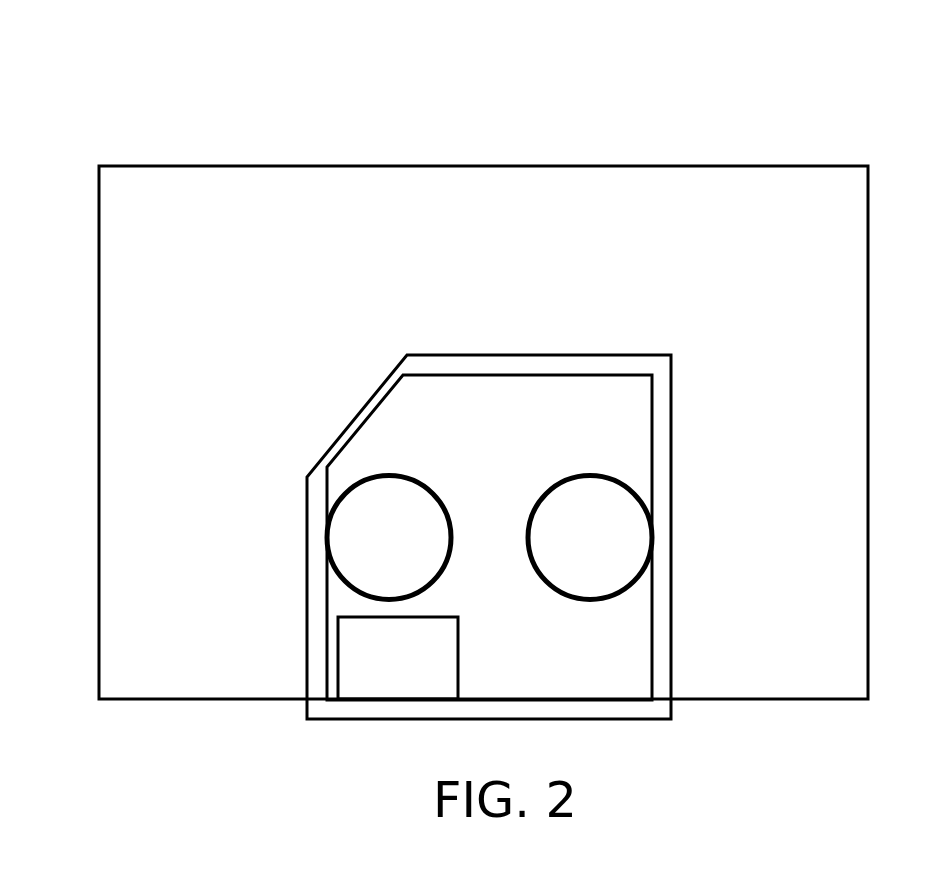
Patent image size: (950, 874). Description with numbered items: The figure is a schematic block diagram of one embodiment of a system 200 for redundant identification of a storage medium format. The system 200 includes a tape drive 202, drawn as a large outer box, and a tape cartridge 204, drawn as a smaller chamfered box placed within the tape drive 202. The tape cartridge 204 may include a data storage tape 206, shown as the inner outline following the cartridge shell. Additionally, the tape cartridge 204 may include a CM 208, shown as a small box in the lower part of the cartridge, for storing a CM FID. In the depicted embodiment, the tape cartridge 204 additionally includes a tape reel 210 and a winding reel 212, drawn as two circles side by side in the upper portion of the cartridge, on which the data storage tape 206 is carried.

The system 200 is at (95, 82).
The tape drive 202 is at (461, 251).
The tape cartridge 204 is at (407, 355).
The data storage tape 206 is at (357, 423).
The CM 208 is at (421, 687).
The tape reel 210 is at (327, 540).
The winding reel 212 is at (652, 540).